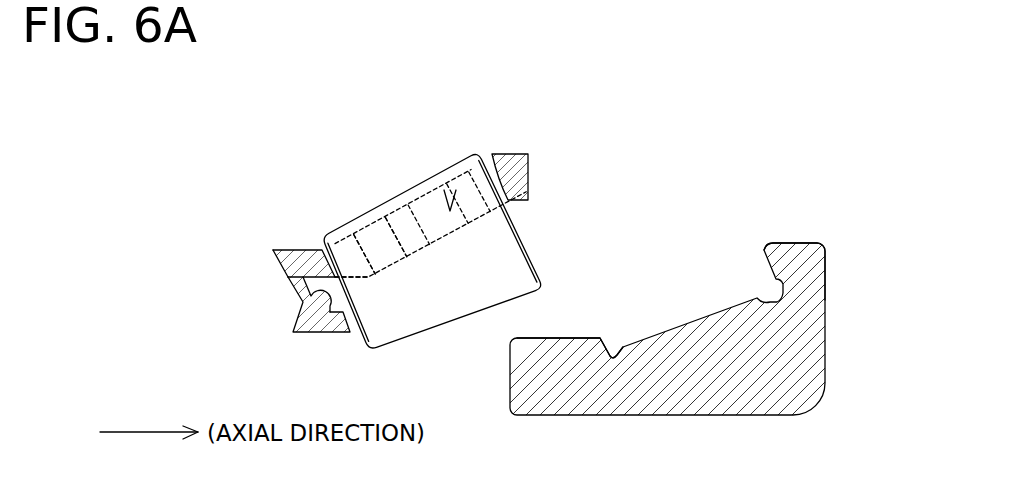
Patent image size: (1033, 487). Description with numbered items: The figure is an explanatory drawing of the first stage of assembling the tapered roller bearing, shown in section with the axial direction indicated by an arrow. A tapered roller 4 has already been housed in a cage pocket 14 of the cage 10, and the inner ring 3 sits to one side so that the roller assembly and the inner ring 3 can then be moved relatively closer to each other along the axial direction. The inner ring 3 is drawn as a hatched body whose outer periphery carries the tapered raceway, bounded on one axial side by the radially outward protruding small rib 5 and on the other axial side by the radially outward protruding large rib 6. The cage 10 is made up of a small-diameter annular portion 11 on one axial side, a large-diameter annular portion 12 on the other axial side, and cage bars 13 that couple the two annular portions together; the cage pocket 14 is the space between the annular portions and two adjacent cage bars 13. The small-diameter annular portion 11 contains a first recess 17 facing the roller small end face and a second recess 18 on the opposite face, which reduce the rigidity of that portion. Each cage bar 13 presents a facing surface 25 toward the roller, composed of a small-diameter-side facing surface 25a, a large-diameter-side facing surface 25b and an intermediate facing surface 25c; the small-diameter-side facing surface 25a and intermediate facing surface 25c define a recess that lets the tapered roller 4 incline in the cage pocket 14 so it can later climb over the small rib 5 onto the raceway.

The inner ring 3 is at (733, 393).
The tapered roller 4 is at (420, 180).
The small rib 5 is at (530, 350).
The large rib 6 is at (797, 272).
The cage 10 is at (518, 154).
The small-diameter annular portion 11 is at (285, 276).
The large-diameter annular portion 12 is at (522, 170).
The cage bar 13 is at (409, 204).
The cage pocket 14 is at (450, 210).
The first recess 17 is at (320, 331).
The second recess 18 is at (303, 302).
The facing surface 25 is at (380, 134).
The small-diameter-side facing surface 25a is at (347, 229).
The large-diameter-side facing surface 25b is at (398, 205).
The intermediate facing surface 25c is at (360, 228).